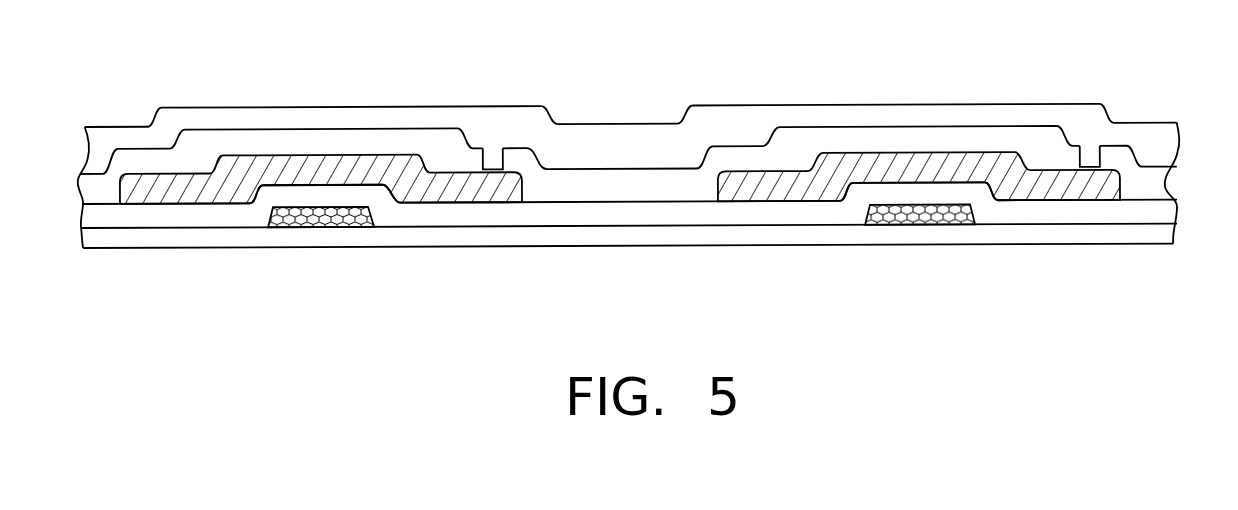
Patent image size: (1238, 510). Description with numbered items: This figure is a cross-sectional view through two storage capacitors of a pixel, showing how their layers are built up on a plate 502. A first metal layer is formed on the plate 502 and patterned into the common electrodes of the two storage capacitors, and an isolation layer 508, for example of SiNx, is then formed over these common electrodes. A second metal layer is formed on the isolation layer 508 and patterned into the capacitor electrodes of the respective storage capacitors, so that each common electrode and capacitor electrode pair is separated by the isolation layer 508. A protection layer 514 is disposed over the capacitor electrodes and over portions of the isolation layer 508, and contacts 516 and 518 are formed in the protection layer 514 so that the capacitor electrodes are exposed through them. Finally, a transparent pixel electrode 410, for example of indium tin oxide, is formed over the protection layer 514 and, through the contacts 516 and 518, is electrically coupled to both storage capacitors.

The transparent pixel electrode 410 is at (613, 147).
The plate 502 is at (1060, 232).
The isolation layer 508 is at (1123, 213).
The protection layer 514 is at (928, 140).
The contact 516 is at (493, 169).
The contact 518 is at (1089, 166).